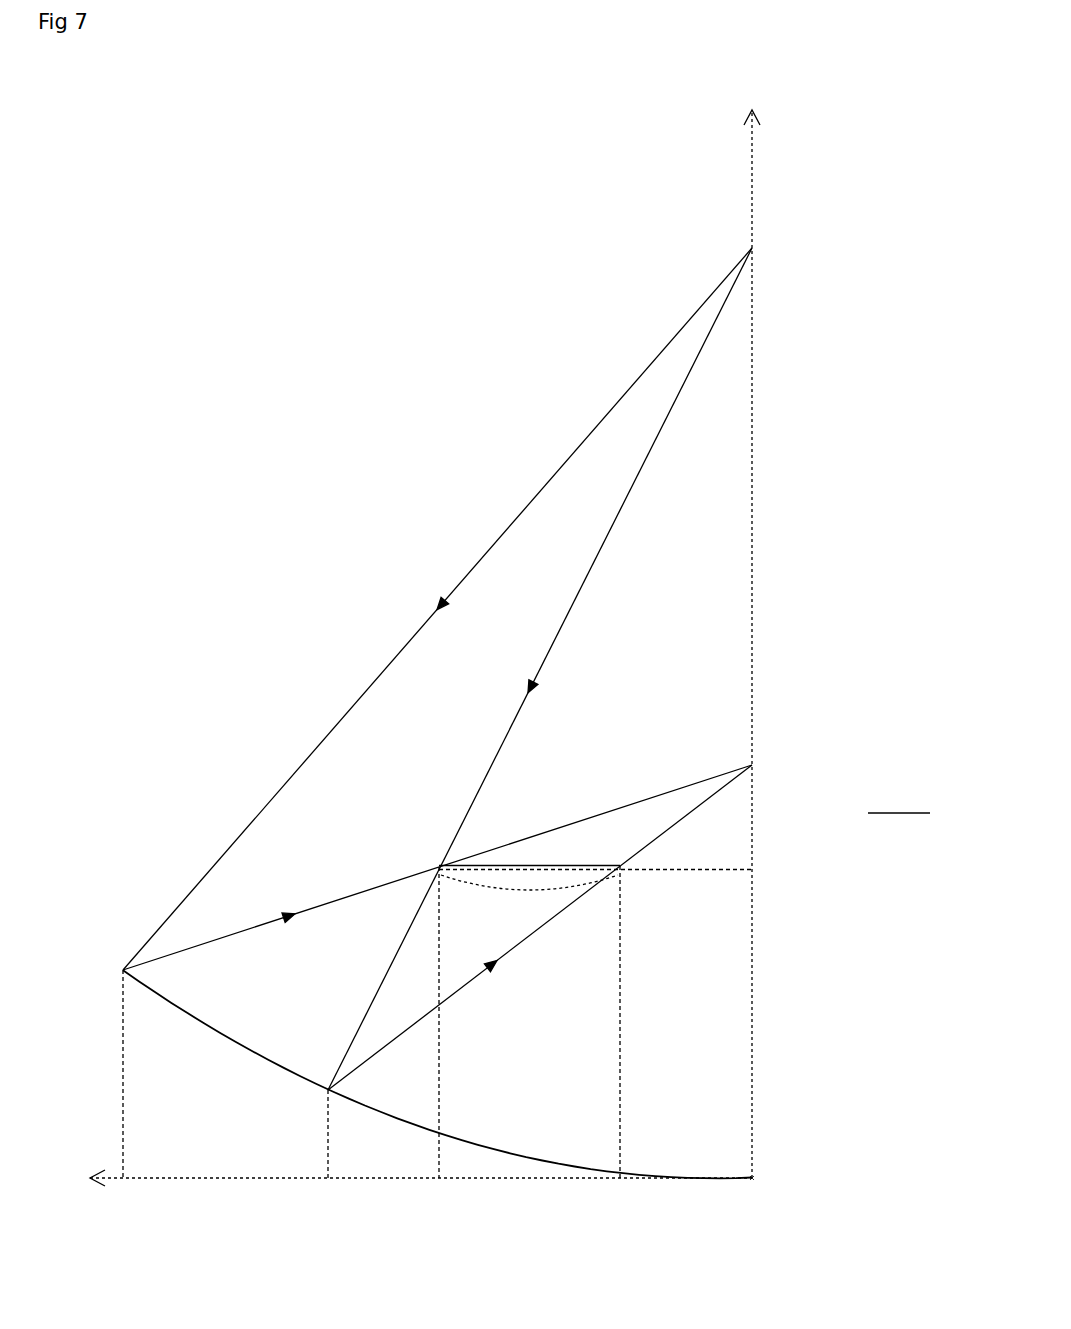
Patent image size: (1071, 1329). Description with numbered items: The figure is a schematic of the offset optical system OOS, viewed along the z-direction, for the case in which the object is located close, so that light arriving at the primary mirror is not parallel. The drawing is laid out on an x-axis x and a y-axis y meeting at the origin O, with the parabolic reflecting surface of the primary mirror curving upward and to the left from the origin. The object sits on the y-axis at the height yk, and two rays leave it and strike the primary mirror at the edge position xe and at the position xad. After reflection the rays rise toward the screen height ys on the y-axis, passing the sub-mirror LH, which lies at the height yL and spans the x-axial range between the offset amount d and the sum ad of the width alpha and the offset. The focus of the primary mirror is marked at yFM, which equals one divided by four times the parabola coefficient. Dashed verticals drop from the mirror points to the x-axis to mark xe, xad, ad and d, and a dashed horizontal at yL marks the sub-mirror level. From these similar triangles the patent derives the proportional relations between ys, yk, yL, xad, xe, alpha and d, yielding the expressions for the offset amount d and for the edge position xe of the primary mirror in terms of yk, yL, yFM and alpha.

The offset optical system OOS is at (235, 154).
The sub-mirror LH is at (525, 866).
The y-axial position of object K yk is at (456, 664).
The y-axial position of screen S ys is at (456, 922).
The y-axial position of sub-mirror LH yL is at (614, 873).
The y-axial position of focus of primary mirror MH yFM is at (852, 816).
The x-axial position of edge MHe of primary mirror MH xe is at (123, 1091).
The x-axial position x(alpha+d) xad is at (332, 1151).
The alpha plus d ad is at (449, 1040).
The offset amount of sub-mirror LH d is at (611, 1039).
The width of sub-mirror LH alpha is at (529, 894).
The x-axis x is at (409, 1178).
The y-axis y is at (752, 629).
The origin O is at (763, 1195).